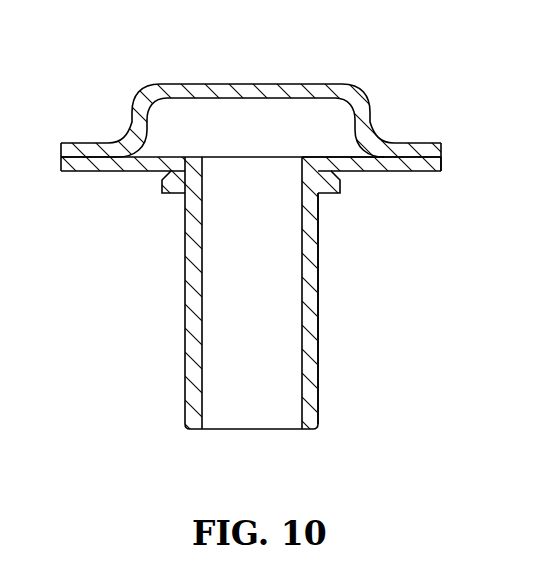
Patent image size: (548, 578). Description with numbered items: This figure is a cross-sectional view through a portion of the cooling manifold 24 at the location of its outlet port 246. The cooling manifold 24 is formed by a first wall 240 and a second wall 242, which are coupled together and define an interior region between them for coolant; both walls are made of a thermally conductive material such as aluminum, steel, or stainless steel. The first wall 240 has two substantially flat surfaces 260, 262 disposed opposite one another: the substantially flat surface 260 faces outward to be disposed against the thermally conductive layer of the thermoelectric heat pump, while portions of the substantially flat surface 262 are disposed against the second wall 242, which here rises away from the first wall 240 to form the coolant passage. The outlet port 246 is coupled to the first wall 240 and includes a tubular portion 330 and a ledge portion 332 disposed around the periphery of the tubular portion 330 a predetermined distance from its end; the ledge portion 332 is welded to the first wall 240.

The cooling manifold 24 is at (274, 237).
The second wall 242 is at (370, 111).
The first wall 240 is at (274, 250).
The substantially flat surface 260 is at (425, 172).
The substantially flat surface 262 is at (337, 157).
The outlet port 246 is at (295, 293).
The tubular portion 330 is at (318, 360).
The ledge portion 332 is at (328, 193).